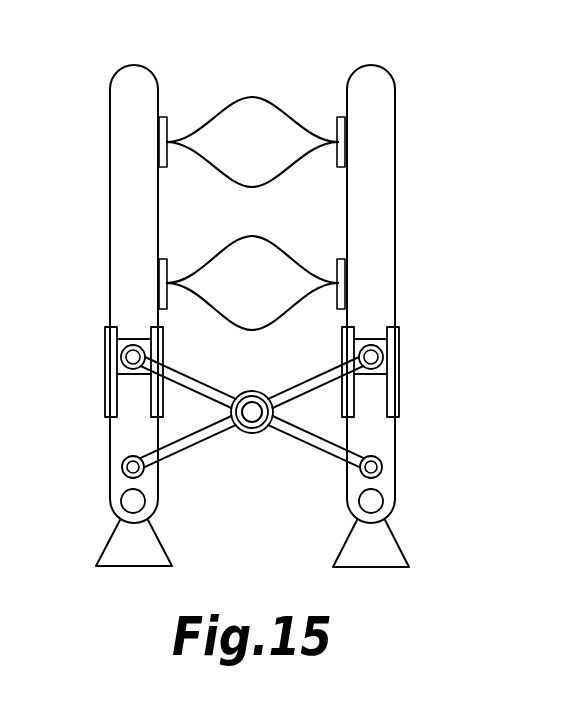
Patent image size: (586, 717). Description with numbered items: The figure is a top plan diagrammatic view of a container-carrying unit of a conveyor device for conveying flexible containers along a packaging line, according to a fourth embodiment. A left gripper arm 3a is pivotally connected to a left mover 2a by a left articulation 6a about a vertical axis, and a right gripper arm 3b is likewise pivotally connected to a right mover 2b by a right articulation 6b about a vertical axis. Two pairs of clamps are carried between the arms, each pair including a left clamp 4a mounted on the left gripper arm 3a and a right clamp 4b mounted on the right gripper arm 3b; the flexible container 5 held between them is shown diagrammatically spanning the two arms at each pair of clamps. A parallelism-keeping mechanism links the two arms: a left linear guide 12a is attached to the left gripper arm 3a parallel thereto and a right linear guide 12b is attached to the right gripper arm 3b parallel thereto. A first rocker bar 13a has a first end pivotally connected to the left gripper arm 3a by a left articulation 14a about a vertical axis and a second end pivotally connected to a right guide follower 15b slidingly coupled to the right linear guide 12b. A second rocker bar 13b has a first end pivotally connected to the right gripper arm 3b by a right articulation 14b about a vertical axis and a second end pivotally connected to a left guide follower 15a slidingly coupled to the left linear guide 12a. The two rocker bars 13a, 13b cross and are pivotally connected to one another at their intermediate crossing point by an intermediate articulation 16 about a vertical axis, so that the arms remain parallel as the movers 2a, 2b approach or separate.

The left gripper arm 3a is at (118, 217).
The right gripper arm 3b is at (385, 217).
The left clamp 4a is at (162, 117).
The right clamp 4b is at (343, 117).
The wave-shaped member 5 is at (253, 97).
The left linear guide 12a is at (107, 339).
The right linear guide 12b is at (399, 339).
The left guide follower 15a is at (130, 367).
The right guide follower 15b is at (375, 367).
The left articulation 14a is at (128, 467).
The right articulation 14b is at (377, 467).
The left articulation 6a is at (134, 500).
The right articulation 6b is at (370, 500).
The first rocker bar 13a is at (199, 443).
The second rocker bar 13b is at (308, 443).
The intermediate articulation 16 is at (252, 414).
The left mover 2a is at (135, 558).
The right mover 2b is at (370, 558).